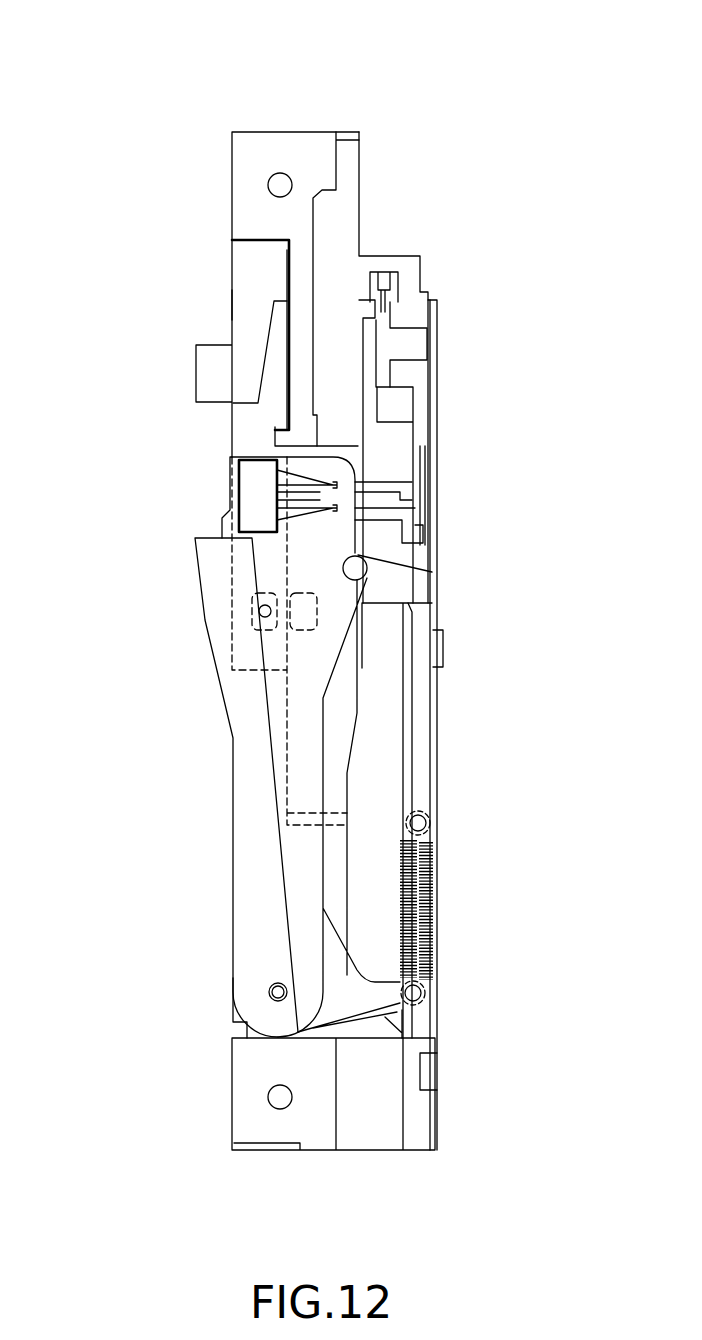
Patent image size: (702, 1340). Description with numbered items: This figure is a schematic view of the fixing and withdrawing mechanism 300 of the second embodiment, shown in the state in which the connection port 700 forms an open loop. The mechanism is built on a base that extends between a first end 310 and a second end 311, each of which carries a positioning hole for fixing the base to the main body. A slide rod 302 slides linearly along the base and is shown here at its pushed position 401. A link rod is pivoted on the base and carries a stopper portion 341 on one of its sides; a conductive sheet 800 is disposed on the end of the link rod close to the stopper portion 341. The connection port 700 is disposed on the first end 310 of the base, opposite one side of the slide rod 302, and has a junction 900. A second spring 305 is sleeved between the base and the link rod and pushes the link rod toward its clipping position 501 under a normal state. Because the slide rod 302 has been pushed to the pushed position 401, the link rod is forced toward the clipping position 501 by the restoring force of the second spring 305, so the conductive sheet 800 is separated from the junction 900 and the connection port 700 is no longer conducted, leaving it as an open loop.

The fixing and withdrawing mechanism 300 is at (185, 30).
The clipping position 501 is at (195, 155).
The first end 310 is at (232, 185).
The pushed position 401 is at (232, 240).
The slide rod 302 is at (232, 302).
The connection port 700 is at (385, 280).
The conductive sheet 800 is at (257, 500).
The junction 900 is at (413, 520).
The stopper portion 341 is at (210, 548).
The second spring 305 is at (435, 923).
The second end 311 is at (232, 1105).